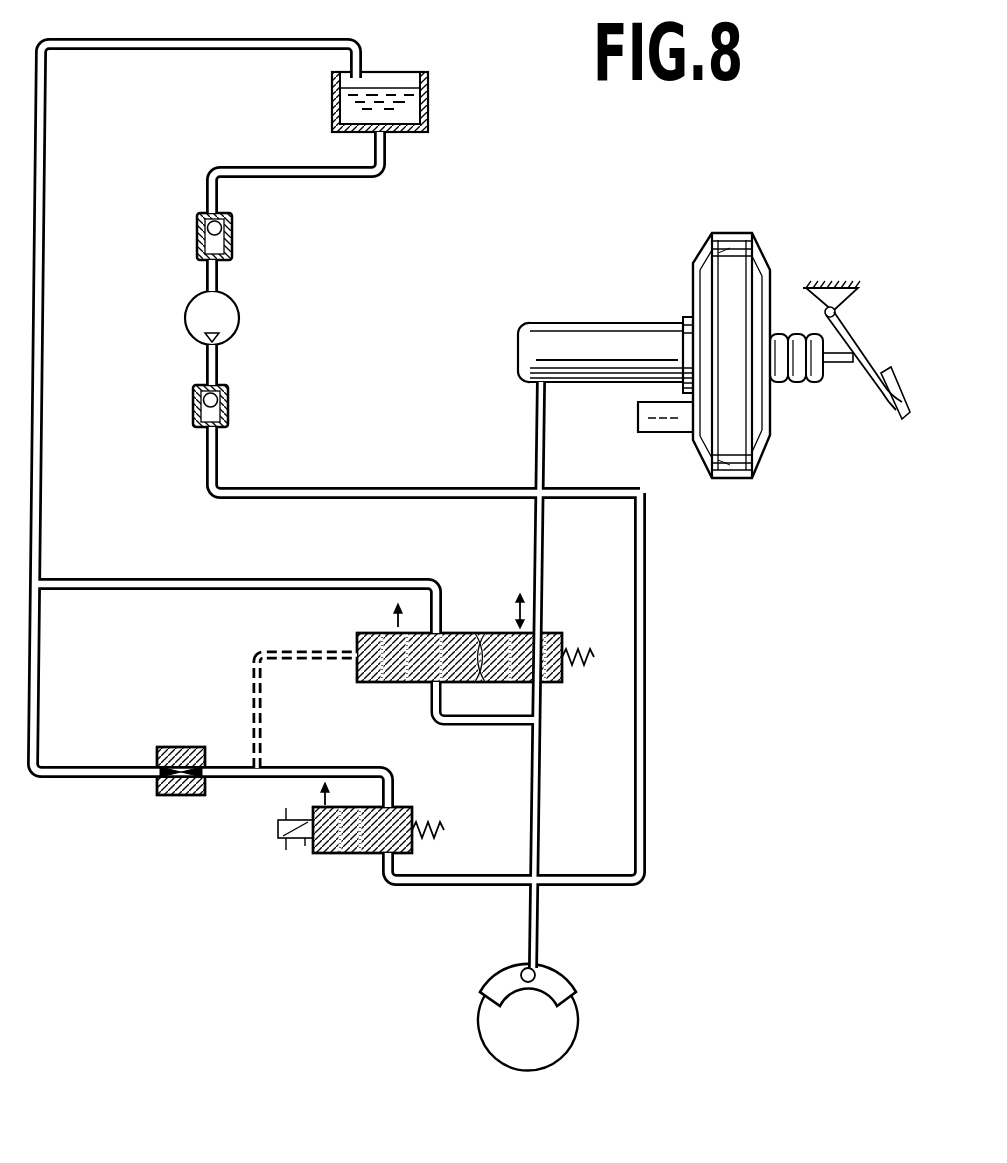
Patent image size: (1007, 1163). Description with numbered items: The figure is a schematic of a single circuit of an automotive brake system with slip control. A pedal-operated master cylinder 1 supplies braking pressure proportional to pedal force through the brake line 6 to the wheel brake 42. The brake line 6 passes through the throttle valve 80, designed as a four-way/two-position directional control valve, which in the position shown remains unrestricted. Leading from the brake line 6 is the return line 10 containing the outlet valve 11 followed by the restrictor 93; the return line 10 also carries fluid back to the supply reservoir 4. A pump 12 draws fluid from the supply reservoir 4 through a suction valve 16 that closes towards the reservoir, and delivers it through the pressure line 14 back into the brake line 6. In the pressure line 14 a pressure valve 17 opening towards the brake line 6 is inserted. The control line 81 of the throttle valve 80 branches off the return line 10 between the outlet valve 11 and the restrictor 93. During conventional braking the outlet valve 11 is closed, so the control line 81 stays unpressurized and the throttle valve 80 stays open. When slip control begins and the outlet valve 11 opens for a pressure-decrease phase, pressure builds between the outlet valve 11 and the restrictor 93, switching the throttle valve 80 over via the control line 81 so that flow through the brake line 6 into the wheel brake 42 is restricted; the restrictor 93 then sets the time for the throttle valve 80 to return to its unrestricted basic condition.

The master cylinder 1 is at (587, 315).
The supply reservoir 4 is at (428, 103).
The brake line 6 is at (537, 425).
The return line 10 is at (147, 579).
The outlet valve 11 is at (325, 855).
The pump 12 is at (223, 305).
The pressure line 14 is at (333, 490).
The suction valve 16 is at (232, 221).
The pressure valve 17 is at (228, 395).
The wheel brake 42 is at (548, 978).
The throttle valve 80 is at (548, 683).
The control line 81 is at (267, 649).
The restrictor 93 is at (185, 747).